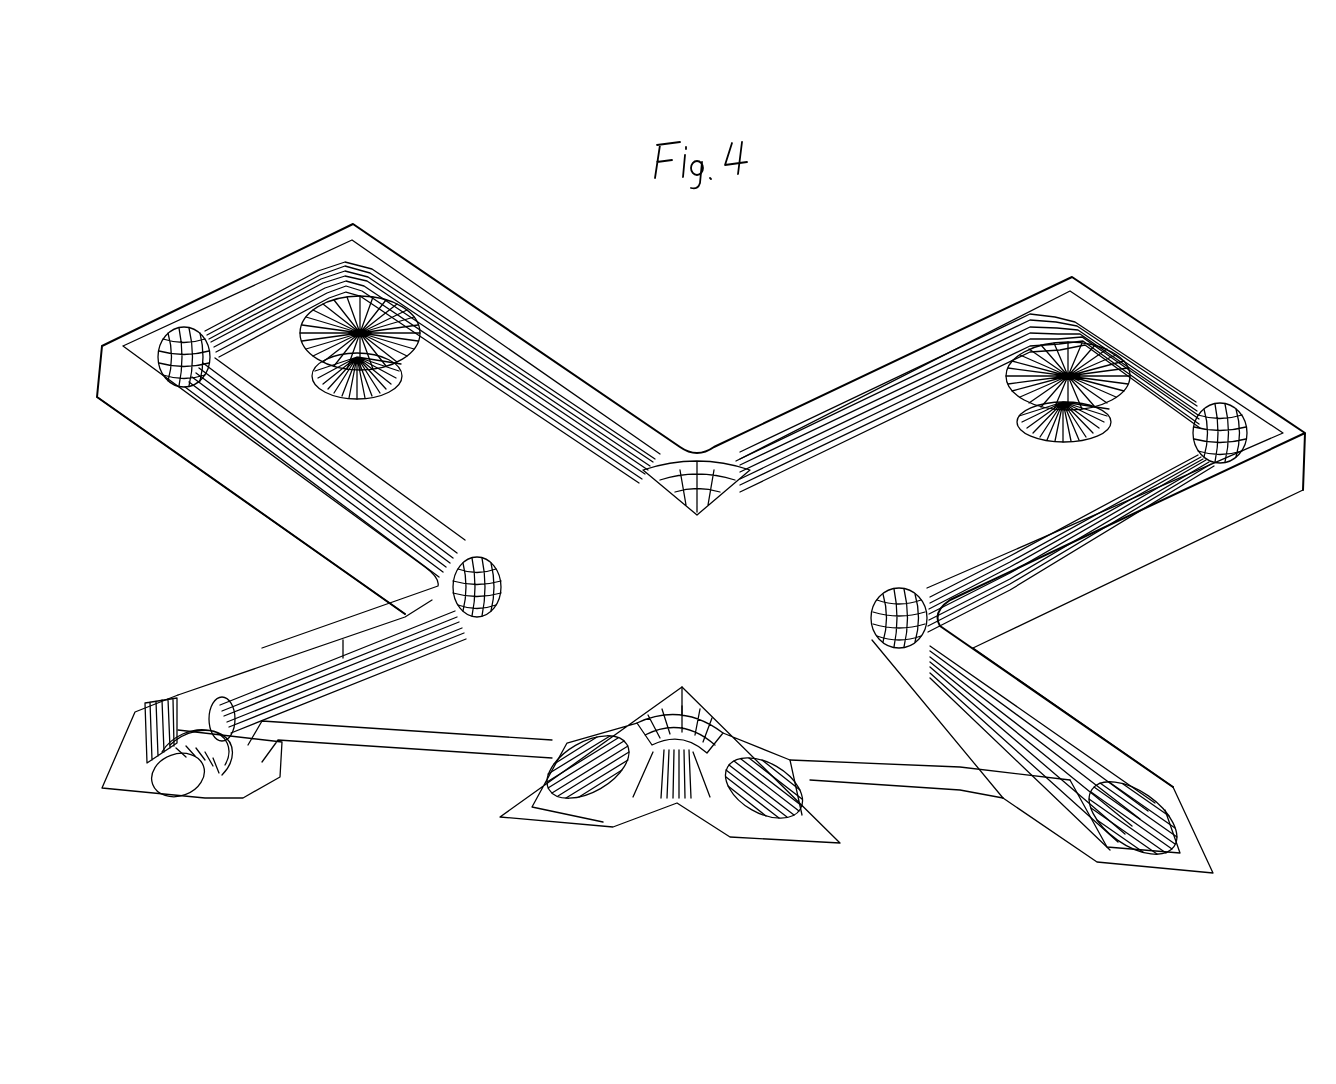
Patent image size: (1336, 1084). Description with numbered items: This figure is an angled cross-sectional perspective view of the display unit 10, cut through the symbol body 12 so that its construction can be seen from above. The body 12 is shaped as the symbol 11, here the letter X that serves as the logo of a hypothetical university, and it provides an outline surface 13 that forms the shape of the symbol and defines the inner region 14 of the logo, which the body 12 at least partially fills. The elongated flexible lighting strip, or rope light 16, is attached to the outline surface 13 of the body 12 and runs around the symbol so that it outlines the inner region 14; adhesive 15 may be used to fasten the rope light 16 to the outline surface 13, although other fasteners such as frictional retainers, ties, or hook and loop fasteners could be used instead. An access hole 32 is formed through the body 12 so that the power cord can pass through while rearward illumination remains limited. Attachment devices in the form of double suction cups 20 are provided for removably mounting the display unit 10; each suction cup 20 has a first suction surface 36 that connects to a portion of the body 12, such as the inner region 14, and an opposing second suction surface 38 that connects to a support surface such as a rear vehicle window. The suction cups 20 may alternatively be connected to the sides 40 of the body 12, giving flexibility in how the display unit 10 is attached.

The display unit 10 is at (997, 245).
The symbol 11 is at (677, 432).
The symbol body 12 is at (818, 493).
The outline surface 13 is at (233, 757).
The inner region 14 is at (640, 625).
The adhesive 15 is at (553, 795).
The elongated flexible lighting strip (rope light) 16 is at (470, 343).
The suction cups 20 is at (1107, 397).
The access hole 32 is at (160, 762).
The first suction surface 36 is at (280, 352).
The second suction surface 38 is at (357, 307).
The sides 40 is at (170, 440).